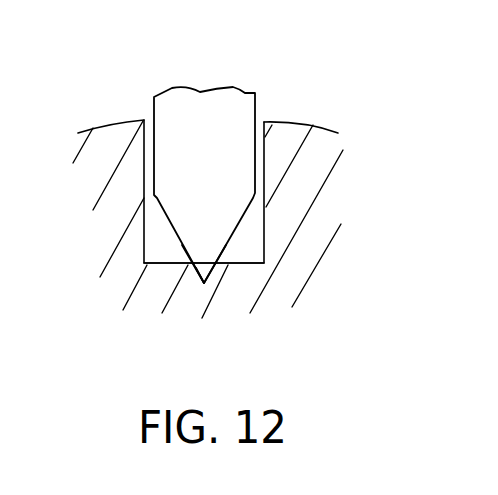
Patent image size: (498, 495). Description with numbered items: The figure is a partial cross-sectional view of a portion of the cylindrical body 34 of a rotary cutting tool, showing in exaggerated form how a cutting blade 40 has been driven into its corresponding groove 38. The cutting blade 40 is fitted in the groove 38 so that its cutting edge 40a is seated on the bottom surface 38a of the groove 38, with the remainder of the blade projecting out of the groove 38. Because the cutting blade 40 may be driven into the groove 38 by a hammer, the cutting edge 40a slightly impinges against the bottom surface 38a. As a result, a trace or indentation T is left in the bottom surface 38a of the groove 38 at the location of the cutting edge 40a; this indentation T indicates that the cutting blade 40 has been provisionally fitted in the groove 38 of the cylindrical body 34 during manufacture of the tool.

The cylindrical body 34 is at (313, 195).
The groove 38 is at (260, 127).
The bottom surface 38a is at (167, 263).
The cutting blade 40 is at (168, 123).
The cutting edge 40a is at (207, 270).
The trace or indentation T is at (196, 270).